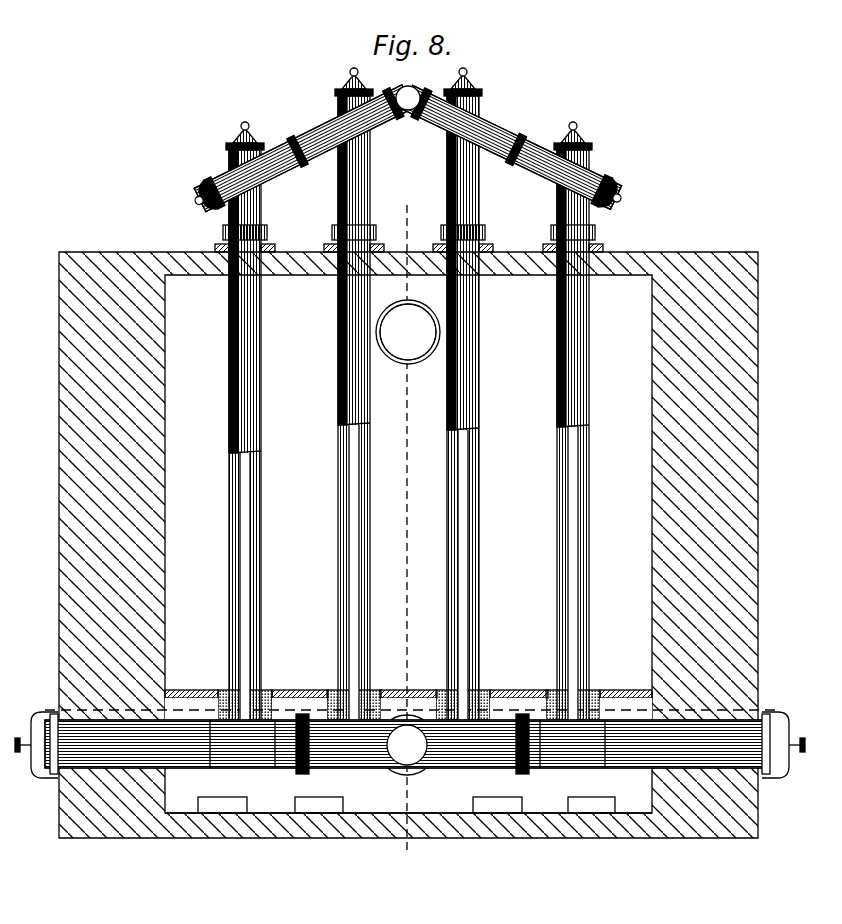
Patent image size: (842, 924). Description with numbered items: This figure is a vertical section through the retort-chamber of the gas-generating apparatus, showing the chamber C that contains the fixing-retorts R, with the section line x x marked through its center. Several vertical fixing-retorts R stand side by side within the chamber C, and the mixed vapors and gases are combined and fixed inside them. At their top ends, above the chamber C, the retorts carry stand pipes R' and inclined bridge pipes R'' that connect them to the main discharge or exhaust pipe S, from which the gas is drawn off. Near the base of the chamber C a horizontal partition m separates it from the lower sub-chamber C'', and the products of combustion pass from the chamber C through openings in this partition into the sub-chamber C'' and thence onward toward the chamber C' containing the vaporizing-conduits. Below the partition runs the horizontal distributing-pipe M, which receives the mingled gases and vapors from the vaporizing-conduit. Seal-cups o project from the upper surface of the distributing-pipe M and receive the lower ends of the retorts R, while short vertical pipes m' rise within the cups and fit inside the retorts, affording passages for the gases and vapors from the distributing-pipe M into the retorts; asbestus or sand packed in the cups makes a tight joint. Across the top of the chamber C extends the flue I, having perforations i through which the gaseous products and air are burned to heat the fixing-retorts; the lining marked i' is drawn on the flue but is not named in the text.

The fixing-retort R is at (409, 408).
The stand pipe R' is at (409, 160).
The bridge pipe R'' is at (407, 149).
The chamber containing the fixing-retorts C is at (424, 545).
The chamber containing the vaporizing-conduits C' is at (406, 796).
The sub-chamber C'' is at (408, 792).
The distributing-pipe M is at (424, 772).
The main discharge or exhaust pipe S is at (410, 733).
The flue I is at (418, 308).
The perforations i is at (408, 345).
The inlet pipe lining i' is at (408, 319).
The horizontal partition m is at (408, 684).
The short vertical pipe m' is at (403, 688).
The seal-cup o is at (412, 709).
The section line x x is at (407, 527).